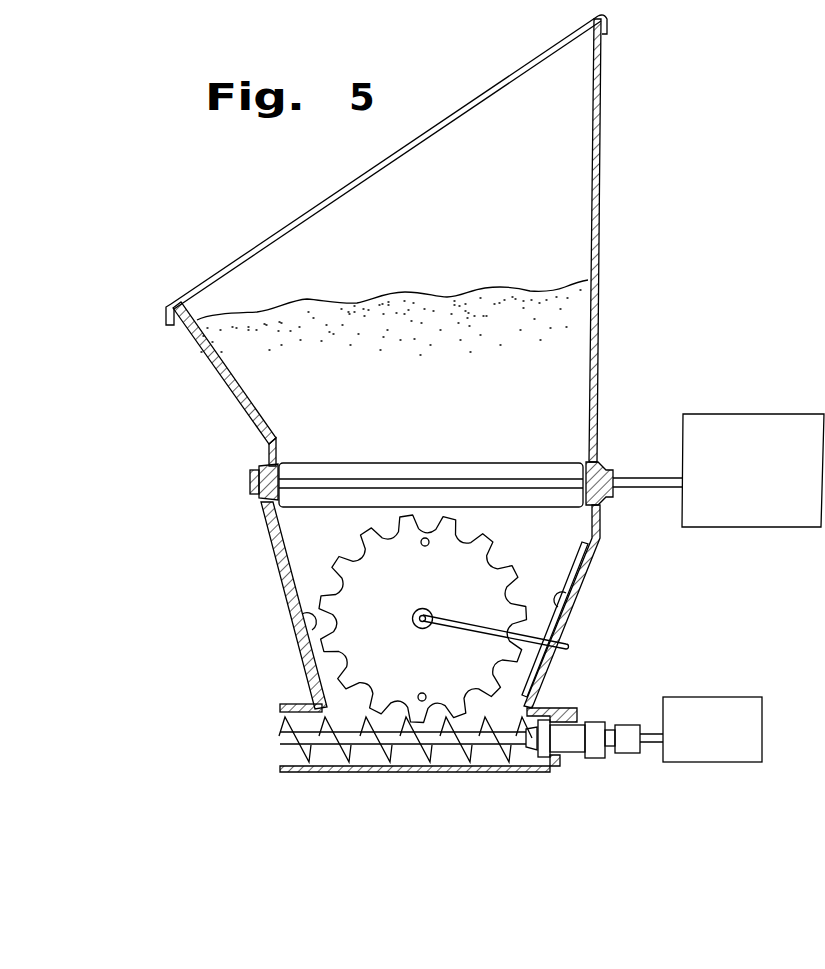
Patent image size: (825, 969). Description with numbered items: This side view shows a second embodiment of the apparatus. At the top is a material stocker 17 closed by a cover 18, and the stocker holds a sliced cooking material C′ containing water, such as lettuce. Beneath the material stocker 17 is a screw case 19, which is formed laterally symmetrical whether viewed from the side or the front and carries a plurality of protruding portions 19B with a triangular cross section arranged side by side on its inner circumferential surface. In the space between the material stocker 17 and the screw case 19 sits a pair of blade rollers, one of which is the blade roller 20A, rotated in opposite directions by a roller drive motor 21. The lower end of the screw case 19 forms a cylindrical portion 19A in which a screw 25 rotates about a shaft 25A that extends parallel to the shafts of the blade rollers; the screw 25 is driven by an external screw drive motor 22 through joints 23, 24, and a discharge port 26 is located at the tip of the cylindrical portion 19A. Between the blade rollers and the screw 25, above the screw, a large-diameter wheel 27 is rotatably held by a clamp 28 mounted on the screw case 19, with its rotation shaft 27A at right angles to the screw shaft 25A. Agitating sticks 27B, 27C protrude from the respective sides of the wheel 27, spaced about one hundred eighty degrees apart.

The material stocker 17 is at (598, 153).
The cover 18 is at (455, 106).
The screw case 19 is at (593, 558).
The cylindrical portion 19A is at (498, 772).
The protruding portions 19B is at (332, 622).
The blade roller 20A is at (483, 466).
The roller drive motor 21 is at (786, 520).
The screw drive motor 22 is at (745, 762).
The joint 23 is at (650, 753).
The joint 24 is at (597, 758).
The screw 25 is at (330, 760).
The shaft 25A is at (437, 755).
The discharge port 26 is at (364, 768).
The wheel 27 is at (367, 588).
The rotation shaft 27A is at (412, 620).
The agitating stick 27B is at (415, 539).
The agitating stick 27C is at (419, 700).
The clamp 28 is at (573, 644).
The sliced cooking material C′ is at (318, 308).